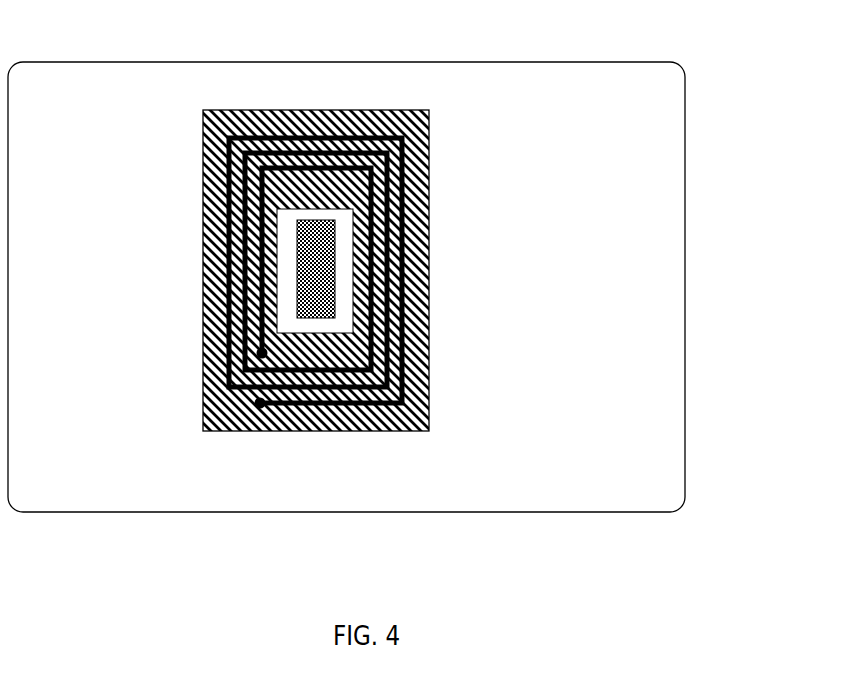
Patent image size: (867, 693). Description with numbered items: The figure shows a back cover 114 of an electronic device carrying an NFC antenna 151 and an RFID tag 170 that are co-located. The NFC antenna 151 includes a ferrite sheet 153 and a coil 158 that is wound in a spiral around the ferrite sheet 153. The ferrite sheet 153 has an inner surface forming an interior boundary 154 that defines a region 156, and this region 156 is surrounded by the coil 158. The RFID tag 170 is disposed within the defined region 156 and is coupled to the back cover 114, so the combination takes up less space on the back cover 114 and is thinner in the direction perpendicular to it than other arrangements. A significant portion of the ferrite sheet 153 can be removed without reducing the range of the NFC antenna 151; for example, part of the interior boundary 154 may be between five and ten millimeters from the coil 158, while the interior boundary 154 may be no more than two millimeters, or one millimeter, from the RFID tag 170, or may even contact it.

The back cover 114 is at (685, 305).
The NFC antenna 151 is at (312, 296).
The ferrite sheet 153 is at (417, 282).
The interior boundary 154 is at (273, 240).
The region 156 is at (287, 298).
The coil 158 is at (403, 343).
The RFID tag 170 is at (337, 318).